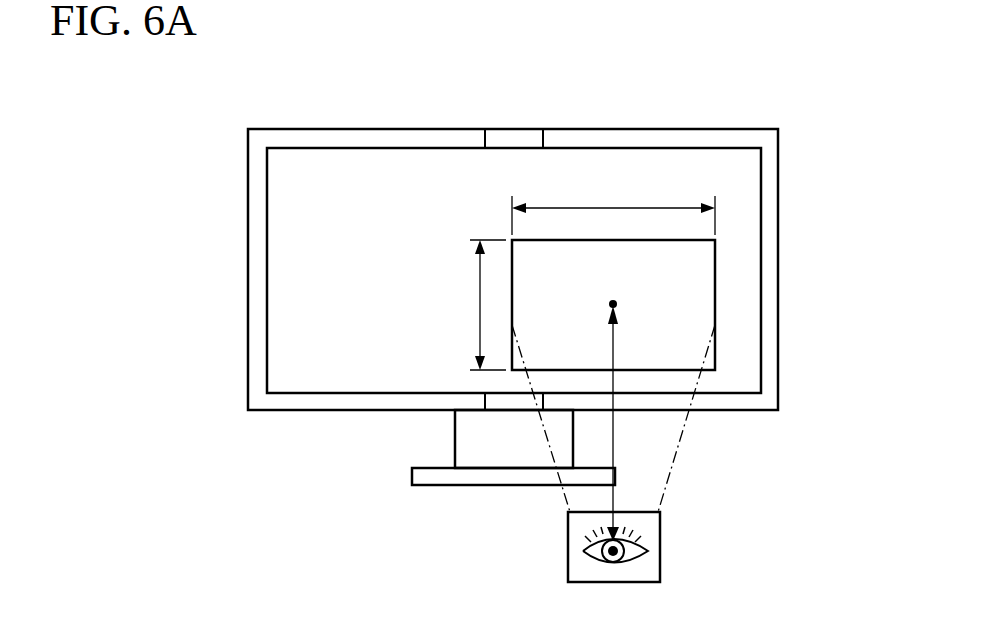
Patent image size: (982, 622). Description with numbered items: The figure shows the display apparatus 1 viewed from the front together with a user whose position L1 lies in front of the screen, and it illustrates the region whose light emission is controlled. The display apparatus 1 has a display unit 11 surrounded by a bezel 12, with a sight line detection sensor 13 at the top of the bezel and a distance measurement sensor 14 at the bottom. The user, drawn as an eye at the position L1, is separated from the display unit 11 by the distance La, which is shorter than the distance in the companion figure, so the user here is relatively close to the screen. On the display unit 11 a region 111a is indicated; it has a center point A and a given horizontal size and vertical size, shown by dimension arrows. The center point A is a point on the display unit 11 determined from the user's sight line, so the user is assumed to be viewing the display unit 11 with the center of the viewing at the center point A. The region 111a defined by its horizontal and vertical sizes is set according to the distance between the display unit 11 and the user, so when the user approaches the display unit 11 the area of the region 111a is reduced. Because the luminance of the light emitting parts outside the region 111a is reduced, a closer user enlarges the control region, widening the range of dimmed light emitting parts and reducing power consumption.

The display apparatus 1 is at (800, 84).
The display unit 11 is at (328, 278).
The bezel 12 is at (260, 181).
The sight line detection sensor 13 is at (514, 139).
The distance measurement sensor 14 is at (514, 401).
The region 111a is at (667, 268).
The center point A is at (617, 304).
The distance La is at (628, 423).
The position of the user L1 is at (660, 540).